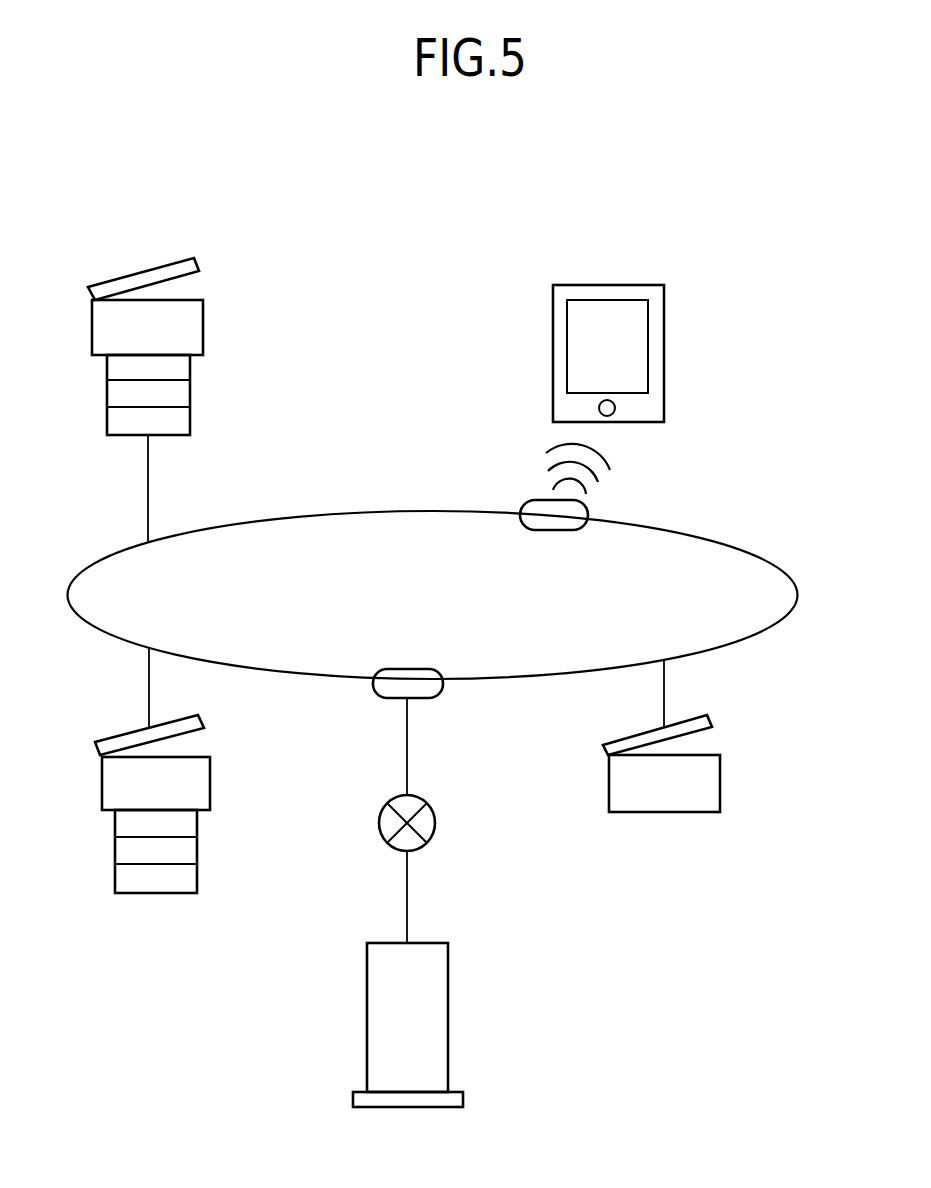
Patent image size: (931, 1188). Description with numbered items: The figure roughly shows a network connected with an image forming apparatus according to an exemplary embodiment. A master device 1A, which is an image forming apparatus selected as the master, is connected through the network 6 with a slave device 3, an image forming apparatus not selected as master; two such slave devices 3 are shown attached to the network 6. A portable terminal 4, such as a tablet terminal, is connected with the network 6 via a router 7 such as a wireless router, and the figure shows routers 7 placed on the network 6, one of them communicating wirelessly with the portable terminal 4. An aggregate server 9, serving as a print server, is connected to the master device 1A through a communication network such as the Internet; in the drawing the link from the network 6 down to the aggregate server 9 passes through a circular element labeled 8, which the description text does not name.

The master device 1A is at (148, 269).
The slave device 3 is at (138, 730).
The portable terminal 4 is at (580, 288).
The network 6 is at (397, 508).
The router 7 is at (520, 502).
The router 8 is at (397, 803).
The aggregate server 9 is at (374, 965).